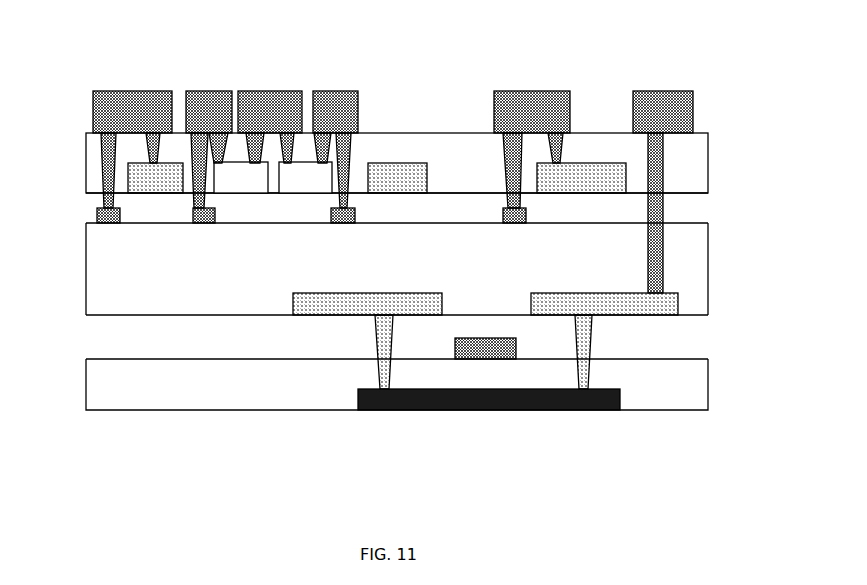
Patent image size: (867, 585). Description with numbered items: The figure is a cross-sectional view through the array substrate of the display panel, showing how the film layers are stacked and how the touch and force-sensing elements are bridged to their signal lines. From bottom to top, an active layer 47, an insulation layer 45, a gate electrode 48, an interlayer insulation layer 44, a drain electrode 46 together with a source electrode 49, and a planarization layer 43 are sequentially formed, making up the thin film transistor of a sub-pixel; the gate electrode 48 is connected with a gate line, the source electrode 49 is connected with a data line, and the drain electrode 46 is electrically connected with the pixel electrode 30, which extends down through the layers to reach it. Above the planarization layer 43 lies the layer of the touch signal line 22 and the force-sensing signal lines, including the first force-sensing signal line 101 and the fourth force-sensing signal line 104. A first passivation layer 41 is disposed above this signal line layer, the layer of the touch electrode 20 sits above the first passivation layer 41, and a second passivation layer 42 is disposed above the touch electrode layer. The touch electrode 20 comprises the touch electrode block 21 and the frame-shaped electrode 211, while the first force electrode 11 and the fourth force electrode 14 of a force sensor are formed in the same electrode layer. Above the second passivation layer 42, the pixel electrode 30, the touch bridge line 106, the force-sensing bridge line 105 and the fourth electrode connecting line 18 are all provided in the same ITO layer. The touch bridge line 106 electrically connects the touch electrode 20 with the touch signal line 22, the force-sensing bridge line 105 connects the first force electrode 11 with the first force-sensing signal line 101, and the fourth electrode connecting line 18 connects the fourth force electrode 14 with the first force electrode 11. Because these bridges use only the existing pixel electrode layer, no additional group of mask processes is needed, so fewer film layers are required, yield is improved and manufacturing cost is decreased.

The touch bridge line 106 is at (143, 120).
The force-sensing bridge line 105 is at (205, 120).
The fourth electrode connecting line 18 is at (262, 113).
The touch electrode 20 is at (583, 60).
The frame-shaped electrode 211 is at (153, 180).
The touch electrode block 21 is at (580, 180).
The pixel electrode 30 is at (667, 110).
The second passivation layer 42 is at (690, 163).
The first passivation layer 41 is at (693, 215).
The planarization layer 43 is at (678, 262).
The interlayer insulation layer 44 is at (678, 338).
The insulation layer 45 is at (687, 388).
The touch signal line 22 is at (112, 215).
The first force-sensing signal line 101 is at (205, 213).
The first force electrode 11 is at (240, 180).
The fourth force electrode 14 is at (296, 176).
The fourth force-sensing signal line 104 is at (343, 215).
The gate electrode 48 is at (475, 347).
The source electrode 49 is at (323, 303).
The drain electrode 46 is at (630, 300).
The active layer 47 is at (490, 410).